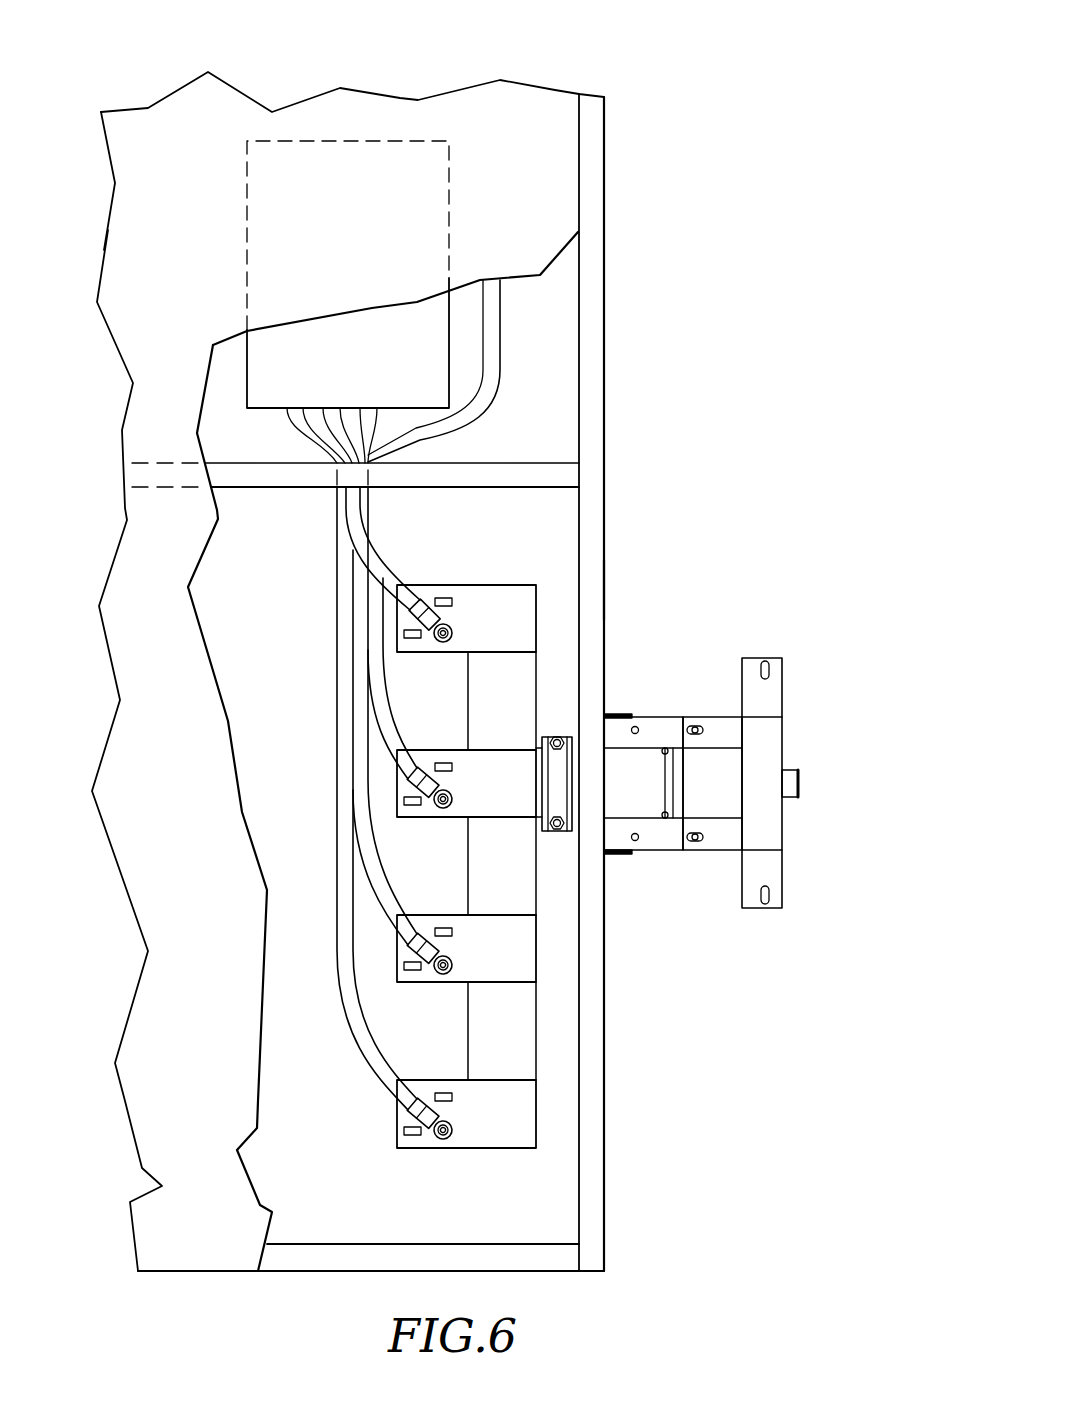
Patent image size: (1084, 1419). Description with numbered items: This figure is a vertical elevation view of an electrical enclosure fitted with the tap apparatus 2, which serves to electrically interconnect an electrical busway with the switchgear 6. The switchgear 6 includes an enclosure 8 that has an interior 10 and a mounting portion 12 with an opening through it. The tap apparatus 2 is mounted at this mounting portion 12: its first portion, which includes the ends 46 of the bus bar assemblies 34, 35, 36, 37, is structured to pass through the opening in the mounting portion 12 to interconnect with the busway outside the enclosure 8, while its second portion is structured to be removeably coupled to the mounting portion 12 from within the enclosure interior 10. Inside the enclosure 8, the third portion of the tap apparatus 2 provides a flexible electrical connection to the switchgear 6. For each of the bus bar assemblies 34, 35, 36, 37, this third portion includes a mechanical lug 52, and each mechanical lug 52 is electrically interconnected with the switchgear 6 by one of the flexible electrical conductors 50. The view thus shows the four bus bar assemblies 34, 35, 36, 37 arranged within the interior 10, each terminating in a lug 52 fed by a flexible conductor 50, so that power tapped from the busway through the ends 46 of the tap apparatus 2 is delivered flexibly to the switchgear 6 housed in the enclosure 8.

The switchgear 6 is at (452, 73).
The enclosure 8 is at (605, 173).
The interior 10 is at (543, 537).
The mounting portion 12 is at (605, 591).
The bus bar assembly 34 is at (397, 621).
The bus bar assembly 35 is at (397, 782).
The bus bar assembly 36 is at (397, 951).
The bus bar assembly 37 is at (397, 1120).
The flexible electrical conductor 50 is at (370, 563).
The mechanical lug 52 is at (446, 641).
The tap apparatus 2 is at (692, 912).
The end of bus bar assembly 46 is at (815, 778).